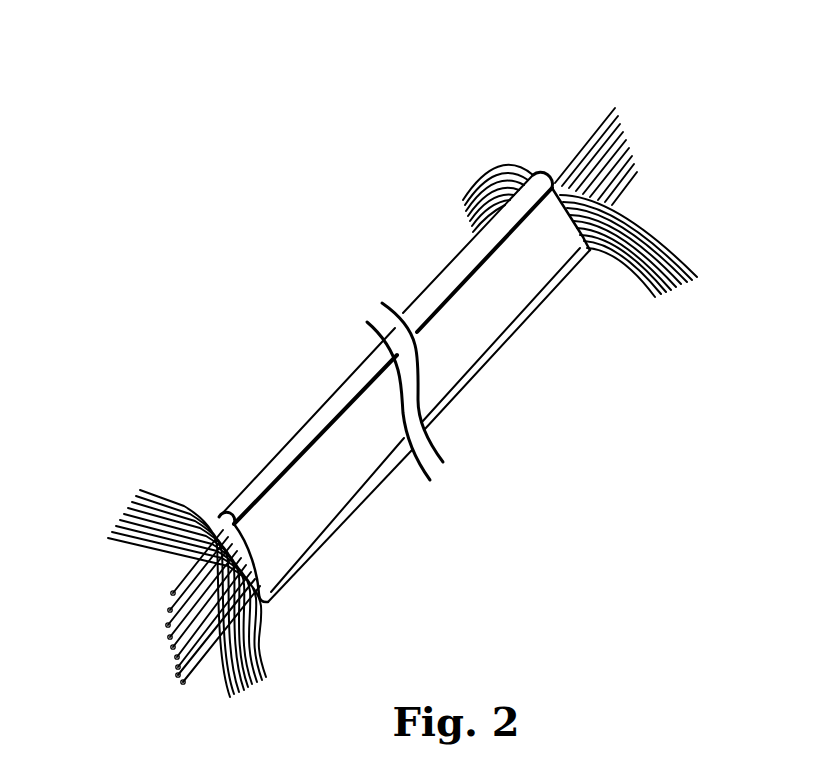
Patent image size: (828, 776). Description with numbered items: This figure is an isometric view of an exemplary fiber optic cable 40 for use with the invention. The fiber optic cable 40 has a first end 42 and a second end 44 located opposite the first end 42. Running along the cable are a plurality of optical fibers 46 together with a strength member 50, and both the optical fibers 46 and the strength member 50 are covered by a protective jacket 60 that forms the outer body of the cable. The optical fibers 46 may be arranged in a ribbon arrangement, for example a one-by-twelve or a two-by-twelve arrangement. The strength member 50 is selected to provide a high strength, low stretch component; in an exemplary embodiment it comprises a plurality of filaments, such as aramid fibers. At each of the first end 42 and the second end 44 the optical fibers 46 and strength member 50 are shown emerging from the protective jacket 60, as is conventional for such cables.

The fiber optic cable 40 is at (408, 188).
The first end 42 is at (537, 160).
The second end 44 is at (205, 511).
The optical fibers 46 is at (636, 147).
The strength member 50 is at (448, 186).
The protective jacket 60 is at (432, 290).